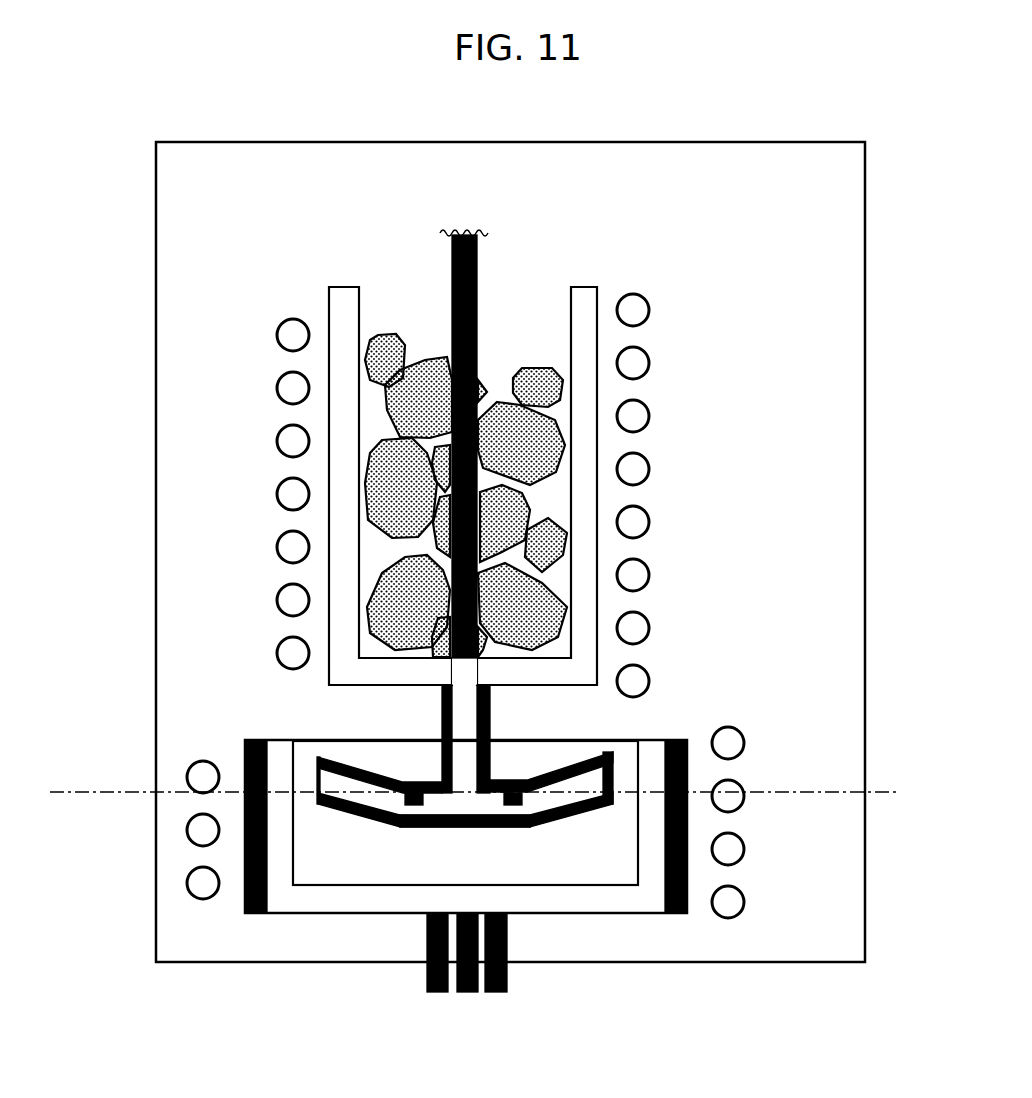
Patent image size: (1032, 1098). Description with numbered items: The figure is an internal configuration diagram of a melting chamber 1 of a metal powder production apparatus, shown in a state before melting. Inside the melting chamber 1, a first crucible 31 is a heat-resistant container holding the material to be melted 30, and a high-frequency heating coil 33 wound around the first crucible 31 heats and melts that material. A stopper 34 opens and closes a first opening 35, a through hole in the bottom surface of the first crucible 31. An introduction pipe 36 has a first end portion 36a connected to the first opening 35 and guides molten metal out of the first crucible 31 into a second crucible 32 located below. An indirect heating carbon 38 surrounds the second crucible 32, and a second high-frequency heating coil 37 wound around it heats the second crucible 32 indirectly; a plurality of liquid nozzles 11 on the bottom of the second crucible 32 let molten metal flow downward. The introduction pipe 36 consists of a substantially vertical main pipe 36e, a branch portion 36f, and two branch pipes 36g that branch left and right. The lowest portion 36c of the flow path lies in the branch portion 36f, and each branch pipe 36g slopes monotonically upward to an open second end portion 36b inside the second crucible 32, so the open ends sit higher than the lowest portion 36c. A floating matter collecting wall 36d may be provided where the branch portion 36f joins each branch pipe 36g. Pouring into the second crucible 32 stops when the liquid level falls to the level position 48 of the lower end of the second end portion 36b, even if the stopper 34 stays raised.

The melting chamber 1 is at (817, 197).
The liquid nozzles 11 is at (507, 975).
The material to be melted 30 is at (531, 368).
The first crucible 31 is at (348, 286).
The second crucible 32 is at (651, 739).
The high-frequency heating coil 33 is at (291, 318).
The stopper 34 is at (480, 251).
The first opening 35 is at (450, 674).
The introduction pipe 36 is at (385, 836).
The first end portion 36a is at (490, 690).
The second end portion 36b is at (318, 758).
The lowest portion 36c is at (470, 802).
The floating matter collecting wall 36d is at (380, 818).
The main pipe 36e is at (491, 722).
The branch portion 36f is at (465, 843).
The branch pipes 36g is at (361, 770).
The high-frequency heating coil 37 is at (738, 727).
The indirect heating carbon 38 is at (677, 739).
The level position 48 is at (117, 790).